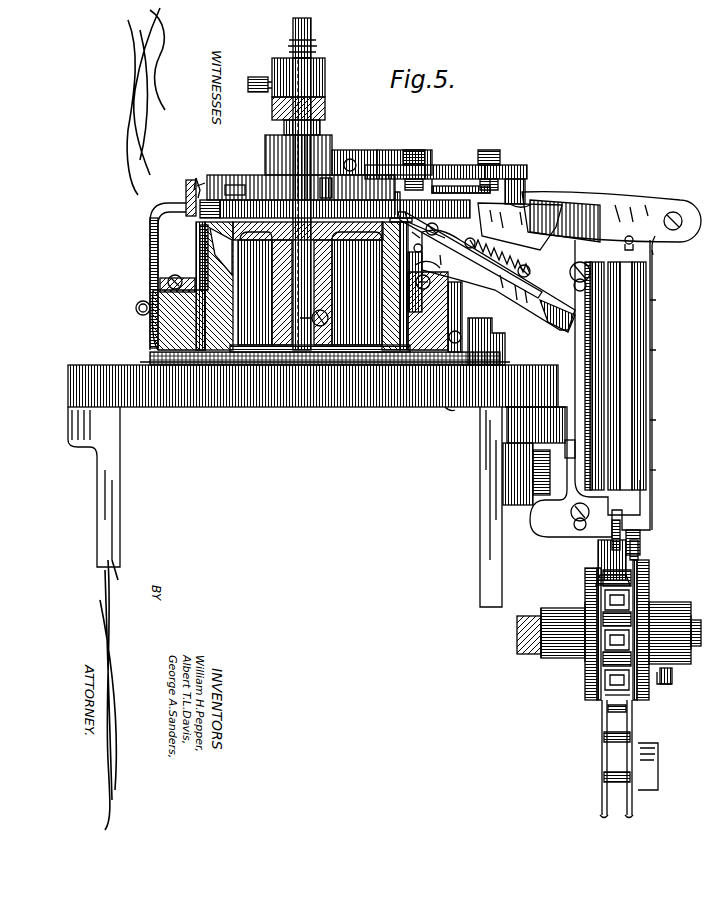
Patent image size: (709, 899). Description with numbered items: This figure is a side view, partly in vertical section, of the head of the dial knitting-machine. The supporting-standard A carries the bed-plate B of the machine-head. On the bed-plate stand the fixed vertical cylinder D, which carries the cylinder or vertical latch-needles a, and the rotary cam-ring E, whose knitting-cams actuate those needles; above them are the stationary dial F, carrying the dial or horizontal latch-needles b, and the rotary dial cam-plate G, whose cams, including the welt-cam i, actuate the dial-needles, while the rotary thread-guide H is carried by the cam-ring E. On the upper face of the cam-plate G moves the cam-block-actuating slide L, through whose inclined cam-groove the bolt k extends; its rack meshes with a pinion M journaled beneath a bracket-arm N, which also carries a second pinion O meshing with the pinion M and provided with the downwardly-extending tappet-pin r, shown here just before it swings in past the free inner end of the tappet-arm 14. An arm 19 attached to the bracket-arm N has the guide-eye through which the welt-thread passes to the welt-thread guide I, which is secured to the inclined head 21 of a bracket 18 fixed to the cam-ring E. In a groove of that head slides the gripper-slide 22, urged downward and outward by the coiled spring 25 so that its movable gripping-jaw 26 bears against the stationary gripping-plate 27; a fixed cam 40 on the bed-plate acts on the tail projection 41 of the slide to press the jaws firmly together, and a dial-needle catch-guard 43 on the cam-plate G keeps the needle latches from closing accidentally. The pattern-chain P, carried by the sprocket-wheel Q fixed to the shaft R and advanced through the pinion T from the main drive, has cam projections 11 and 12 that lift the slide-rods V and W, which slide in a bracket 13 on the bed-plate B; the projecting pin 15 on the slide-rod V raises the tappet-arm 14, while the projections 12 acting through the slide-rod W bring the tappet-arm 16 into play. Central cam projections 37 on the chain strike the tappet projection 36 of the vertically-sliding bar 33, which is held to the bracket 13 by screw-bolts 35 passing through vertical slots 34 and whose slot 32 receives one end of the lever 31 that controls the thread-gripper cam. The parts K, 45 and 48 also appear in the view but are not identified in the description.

The pulley and shaft K is at (300, 30).
The bolt k is at (352, 160).
The cam-block-actuating slide L is at (368, 170).
The arm 19 is at (408, 148).
The pinion M is at (395, 163).
The bracket-arm N is at (455, 163).
The second pinion O is at (512, 170).
The pattern-chain P is at (527, 186).
The tappet-pin r is at (521, 201).
The tappet-arm 14 is at (611, 217).
The bracket 13 is at (660, 248).
The projecting pin 15 is at (640, 252).
The tappet-arm 16 is at (520, 226).
The dial-needle catch-guard 43 is at (402, 207).
The welt-thread guide I is at (412, 220).
The cylinder latch-needles a is at (413, 249).
The dial latch-needles b is at (412, 236).
The gripping-jaw 26 is at (434, 234).
The coiled spring 25 is at (520, 268).
The inclined head 21 is at (498, 280).
The gripper-slide 22 is at (535, 292).
The gripping-plate 27 is at (424, 252).
The fixed vertical cylinder D is at (205, 262).
The rotary cam-ring E is at (155, 325).
The stationary dial F is at (202, 222).
The rotary dial cam-plate G is at (250, 178).
The rotary thread-guide H is at (185, 187).
The welt-cam i is at (327, 188).
The screw 45 is at (236, 191).
The bracket 18 is at (455, 335).
The fixed cam 40 is at (500, 350).
The tail projection 41 is at (557, 321).
The sliding bar 33 is at (576, 368).
The vertical slots 34 is at (575, 522).
The screw-bolts 35 is at (570, 512).
The slide-rod W is at (606, 360).
The slide-rod V is at (648, 392).
The lever 31 is at (533, 474).
The slot 32 is at (563, 458).
The tappet projection 36 is at (614, 536).
The cam projections 11 is at (640, 546).
The cam projections 12 is at (600, 552).
The central cam projections 37 is at (600, 564).
The supporting-standard A is at (110, 505).
The bed-plate B is at (146, 413).
The shaft R is at (597, 643).
The sprocket-wheel Q is at (648, 570).
The pinion T is at (694, 638).
The guide 48 is at (650, 766).